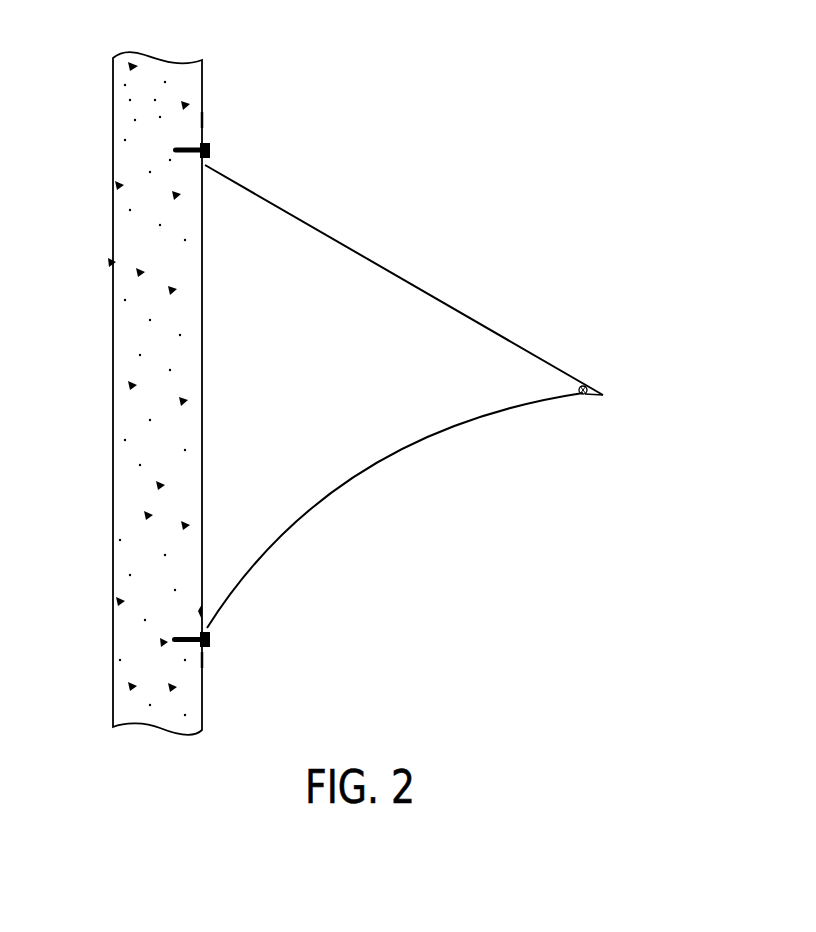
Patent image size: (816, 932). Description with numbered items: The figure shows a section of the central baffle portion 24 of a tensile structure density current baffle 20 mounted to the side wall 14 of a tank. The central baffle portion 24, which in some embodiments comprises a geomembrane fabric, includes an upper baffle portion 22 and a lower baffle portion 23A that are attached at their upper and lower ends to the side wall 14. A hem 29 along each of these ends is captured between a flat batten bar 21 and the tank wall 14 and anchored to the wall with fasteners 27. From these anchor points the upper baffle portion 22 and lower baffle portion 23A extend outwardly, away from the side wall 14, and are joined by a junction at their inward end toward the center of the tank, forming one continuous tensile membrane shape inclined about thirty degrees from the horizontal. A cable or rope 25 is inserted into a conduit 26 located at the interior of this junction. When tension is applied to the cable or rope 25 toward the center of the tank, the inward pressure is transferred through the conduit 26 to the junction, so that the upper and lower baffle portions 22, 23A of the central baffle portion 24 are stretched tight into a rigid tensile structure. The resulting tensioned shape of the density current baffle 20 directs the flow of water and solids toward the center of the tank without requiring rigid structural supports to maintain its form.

The side wall 14 is at (113, 398).
The density current baffle 20 is at (546, 286).
The flat batten bar 21 is at (204, 138).
The upper baffle portion 22 is at (407, 275).
The lower baffle portion 23A is at (375, 468).
The central baffle portion 24 is at (603, 395).
The cable or rope 25 is at (585, 385).
The conduit 26 is at (585, 398).
The fasteners 27 is at (206, 161).
The hem 29 is at (205, 123).